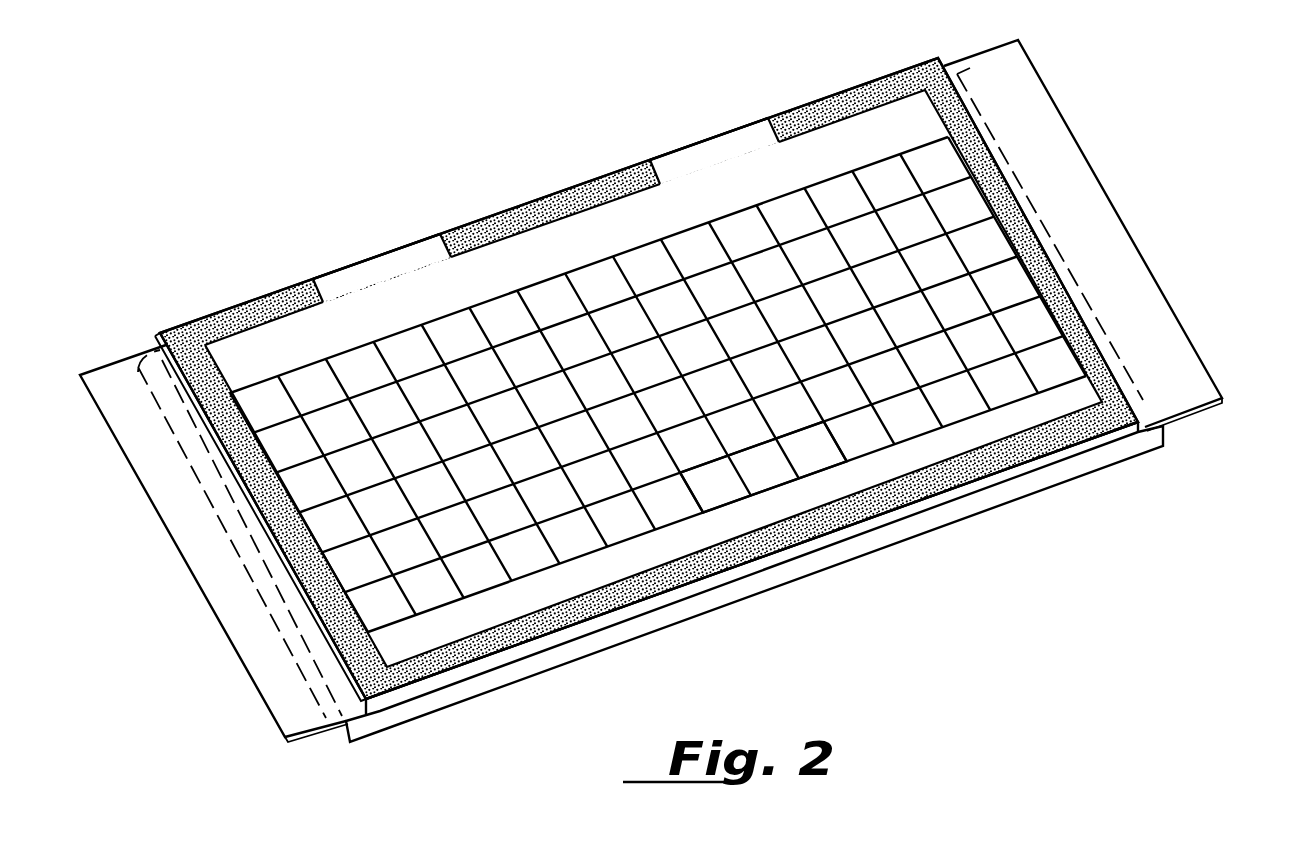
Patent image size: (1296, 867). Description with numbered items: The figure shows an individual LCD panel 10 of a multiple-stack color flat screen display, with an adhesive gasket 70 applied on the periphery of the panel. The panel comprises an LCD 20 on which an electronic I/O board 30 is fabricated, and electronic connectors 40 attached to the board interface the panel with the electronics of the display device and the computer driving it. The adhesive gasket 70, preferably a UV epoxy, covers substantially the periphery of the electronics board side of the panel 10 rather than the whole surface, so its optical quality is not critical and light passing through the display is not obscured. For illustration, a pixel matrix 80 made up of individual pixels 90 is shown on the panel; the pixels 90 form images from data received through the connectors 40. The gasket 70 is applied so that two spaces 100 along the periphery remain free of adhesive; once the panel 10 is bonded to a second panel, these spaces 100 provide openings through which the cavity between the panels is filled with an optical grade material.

The LCD panel 10 is at (338, 165).
The LCD 20 is at (488, 689).
The electronic I/O board 30 is at (620, 617).
The electronic connectors 40 is at (258, 657).
The adhesive gasket 70 is at (228, 313).
The pixel matrix 80 is at (888, 418).
The pixels 90 is at (718, 492).
The spaces 100 is at (720, 148).